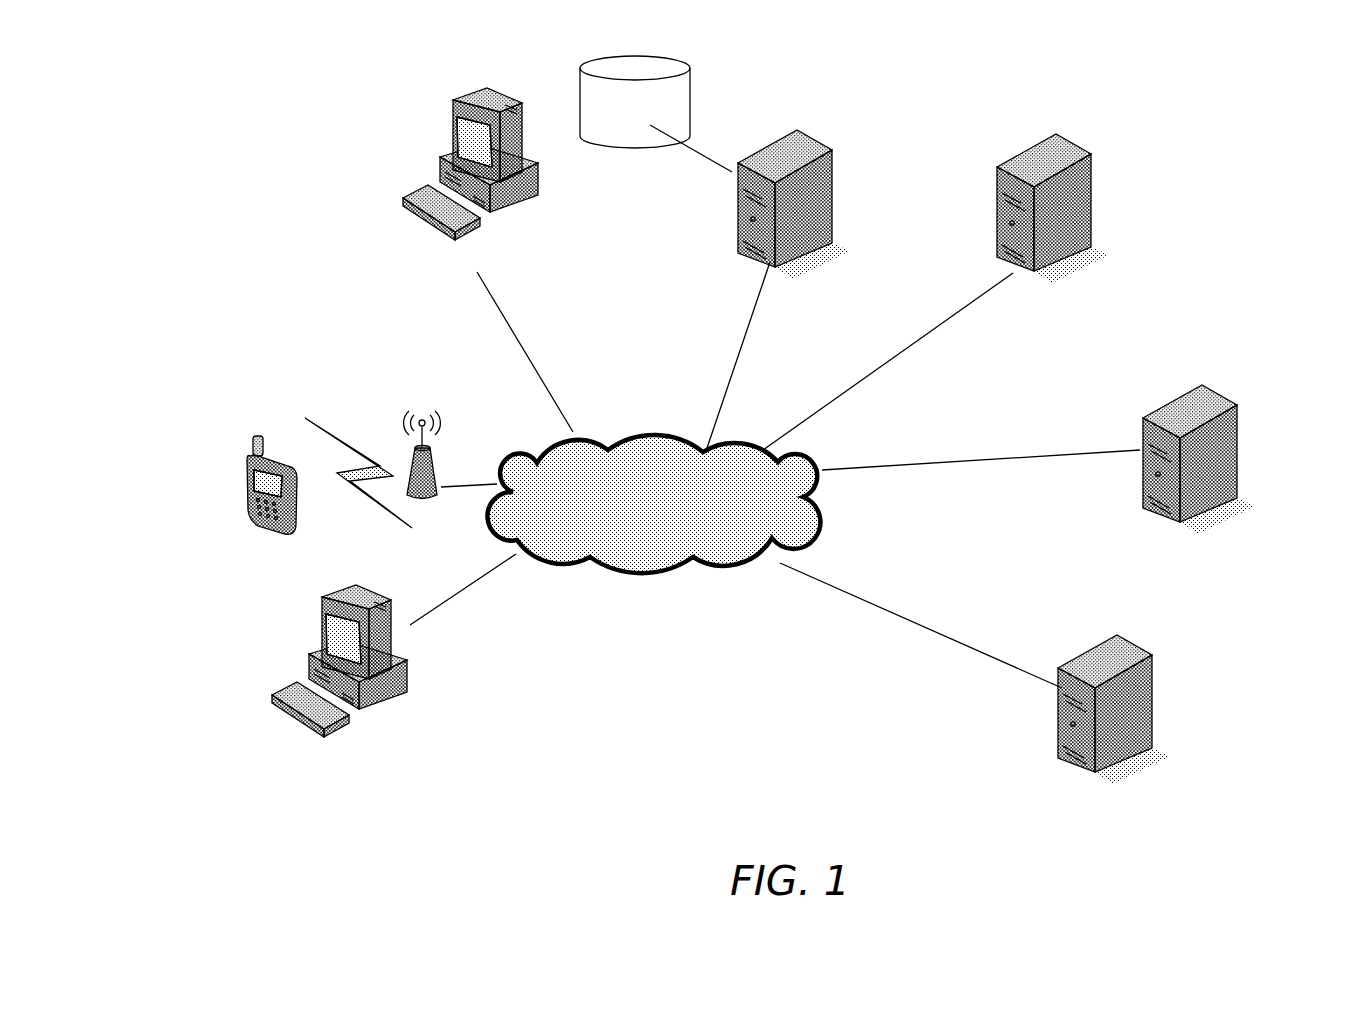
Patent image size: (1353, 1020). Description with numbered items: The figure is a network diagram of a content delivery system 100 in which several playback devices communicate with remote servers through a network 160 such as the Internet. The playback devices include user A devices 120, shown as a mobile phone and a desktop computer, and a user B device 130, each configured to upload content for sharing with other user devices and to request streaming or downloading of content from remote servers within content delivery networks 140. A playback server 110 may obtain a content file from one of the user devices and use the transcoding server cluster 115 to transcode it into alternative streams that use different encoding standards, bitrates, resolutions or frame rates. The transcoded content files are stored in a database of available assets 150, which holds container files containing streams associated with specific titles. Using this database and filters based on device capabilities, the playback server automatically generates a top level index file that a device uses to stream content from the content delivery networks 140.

The content delivery system 100 is at (1220, 186).
The playback server 110 is at (835, 198).
The transcoding server cluster 115 is at (1077, 220).
The user A device 120 is at (252, 520).
The user B device 130 is at (453, 155).
The content delivery network 140 is at (1232, 392).
The database of available assets 150 is at (677, 118).
The network 160 is at (690, 563).